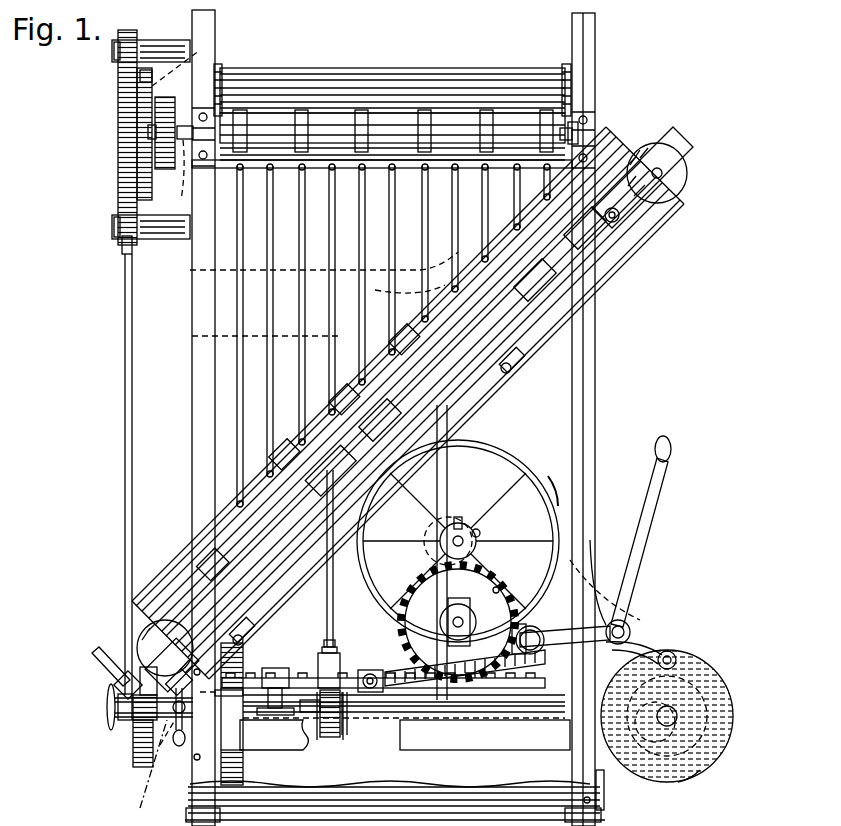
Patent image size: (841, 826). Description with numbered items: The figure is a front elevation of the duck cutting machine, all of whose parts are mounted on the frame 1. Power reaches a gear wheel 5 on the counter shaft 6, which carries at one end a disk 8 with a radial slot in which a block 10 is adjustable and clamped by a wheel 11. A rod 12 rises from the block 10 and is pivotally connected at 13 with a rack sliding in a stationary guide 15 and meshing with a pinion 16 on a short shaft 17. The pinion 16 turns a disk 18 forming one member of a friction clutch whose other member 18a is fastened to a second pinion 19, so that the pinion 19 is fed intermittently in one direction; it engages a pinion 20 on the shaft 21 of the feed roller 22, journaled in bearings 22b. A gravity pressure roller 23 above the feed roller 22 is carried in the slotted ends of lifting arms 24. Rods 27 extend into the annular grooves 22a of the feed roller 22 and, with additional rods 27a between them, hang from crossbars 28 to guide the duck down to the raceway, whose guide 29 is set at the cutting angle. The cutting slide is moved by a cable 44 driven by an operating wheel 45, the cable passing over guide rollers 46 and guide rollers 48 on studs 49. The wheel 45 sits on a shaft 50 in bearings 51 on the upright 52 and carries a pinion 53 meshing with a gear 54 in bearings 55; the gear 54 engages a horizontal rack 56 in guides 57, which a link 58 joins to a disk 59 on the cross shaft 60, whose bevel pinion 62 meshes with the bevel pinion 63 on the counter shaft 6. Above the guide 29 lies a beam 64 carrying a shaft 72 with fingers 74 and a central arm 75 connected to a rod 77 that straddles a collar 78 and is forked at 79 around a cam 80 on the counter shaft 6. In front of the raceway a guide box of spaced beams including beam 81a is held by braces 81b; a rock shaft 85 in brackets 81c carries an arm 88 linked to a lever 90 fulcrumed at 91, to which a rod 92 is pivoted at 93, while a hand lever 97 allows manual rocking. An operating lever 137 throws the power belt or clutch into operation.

The frame 1 is at (596, 476).
The gear wheel 5 is at (243, 768).
The counter shaft 6 is at (388, 722).
The disk 8 is at (132, 760).
The block 10 is at (115, 708).
The wheel 11 is at (108, 688).
The rod 12 is at (124, 478).
The pivotal connection 13 is at (120, 246).
The stationary guide 15 is at (112, 58).
The pinion 16 is at (118, 150).
The short shaft 17 is at (116, 132).
The disk 18 is at (146, 70).
The clutch member 18a is at (197, 53).
The second pinion 19 is at (170, 102).
The pinion 20 is at (166, 150).
The shaft 21 is at (597, 134).
The feed roller 22 is at (392, 135).
The annular grooves 22a is at (308, 128).
The bearings 22b is at (595, 128).
The pressure roller 23 is at (283, 68).
The lifting arms 24 is at (222, 70).
The rods 27 is at (309, 273).
The additional rods 27a is at (390, 326).
The crossbars 28 is at (320, 172).
The guide 29 is at (680, 130).
The cable 44 is at (622, 222).
The operating wheel 45 is at (520, 470).
The guide rollers 46 is at (676, 178).
The guide rollers 48 is at (516, 352).
The studs 49 is at (512, 369).
The shaft 50 is at (440, 538).
The bearings 51 is at (459, 516).
The upright 52 is at (400, 612).
The pinion 53 is at (480, 530).
The gear 54 is at (494, 586).
The bearings 55 is at (490, 612).
The rack 56 is at (530, 692).
The guides 57 is at (280, 678).
The link 58 is at (640, 630).
The disk 59 is at (690, 660).
The cross shaft 60 is at (700, 690).
The bevel pinion 62 is at (706, 762).
The bevel pinion 63 is at (630, 768).
The beam 64 is at (200, 566).
The shaft 72 is at (290, 448).
The fingers 74 is at (408, 336).
The arm 75 is at (347, 398).
The rod 77 is at (326, 580).
The collar 78 is at (306, 718).
The fork 79 is at (344, 735).
The cam 80 is at (328, 742).
The beam 81a is at (185, 612).
The braces 81b is at (628, 248).
The brackets 81c is at (590, 260).
The rock shaft 85 is at (310, 556).
The arm 88 is at (135, 718).
The lever 90 is at (170, 735).
The fulcrum 91 is at (196, 700).
The rod 92 is at (152, 771).
The pivotal connection 93 is at (178, 746).
The hand lever 97 is at (92, 650).
The operating lever 137 is at (645, 564).